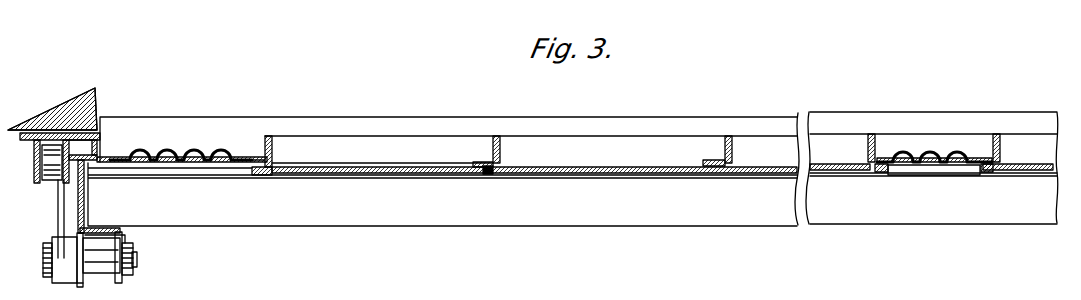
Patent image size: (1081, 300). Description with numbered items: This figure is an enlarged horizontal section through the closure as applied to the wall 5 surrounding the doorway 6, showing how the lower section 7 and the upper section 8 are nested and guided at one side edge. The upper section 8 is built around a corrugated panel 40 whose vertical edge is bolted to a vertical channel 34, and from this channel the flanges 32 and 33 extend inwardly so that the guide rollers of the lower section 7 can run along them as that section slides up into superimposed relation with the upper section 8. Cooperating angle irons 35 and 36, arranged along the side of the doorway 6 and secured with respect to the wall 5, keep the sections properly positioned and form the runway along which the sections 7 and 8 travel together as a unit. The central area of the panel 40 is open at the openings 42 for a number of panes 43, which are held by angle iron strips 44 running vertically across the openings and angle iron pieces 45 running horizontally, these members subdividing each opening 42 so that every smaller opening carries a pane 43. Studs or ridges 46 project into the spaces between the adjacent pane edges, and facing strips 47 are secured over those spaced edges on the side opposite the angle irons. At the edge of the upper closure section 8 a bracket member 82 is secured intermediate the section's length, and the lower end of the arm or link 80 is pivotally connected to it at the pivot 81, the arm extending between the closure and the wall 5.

The wall 5 is at (88, 87).
The doorway 6 is at (207, 113).
The lower section 7 is at (377, 213).
The upper section 8 is at (435, 137).
The flange 32 is at (112, 157).
The flange 33 is at (137, 245).
The vertical channel 34 is at (78, 204).
The angle iron 35 is at (99, 120).
The angle iron 36 is at (78, 108).
The corrugated panel 40 is at (203, 163).
The opening 42 is at (262, 150).
The pane 43 is at (417, 176).
The angle iron strip 44 is at (270, 147).
The angle iron piece 45 is at (360, 143).
The stud 46 is at (487, 174).
The facing strip 47 is at (494, 174).
The arm 80 is at (58, 237).
The pivotal connection 81 is at (103, 263).
The bracket member 82 is at (80, 282).